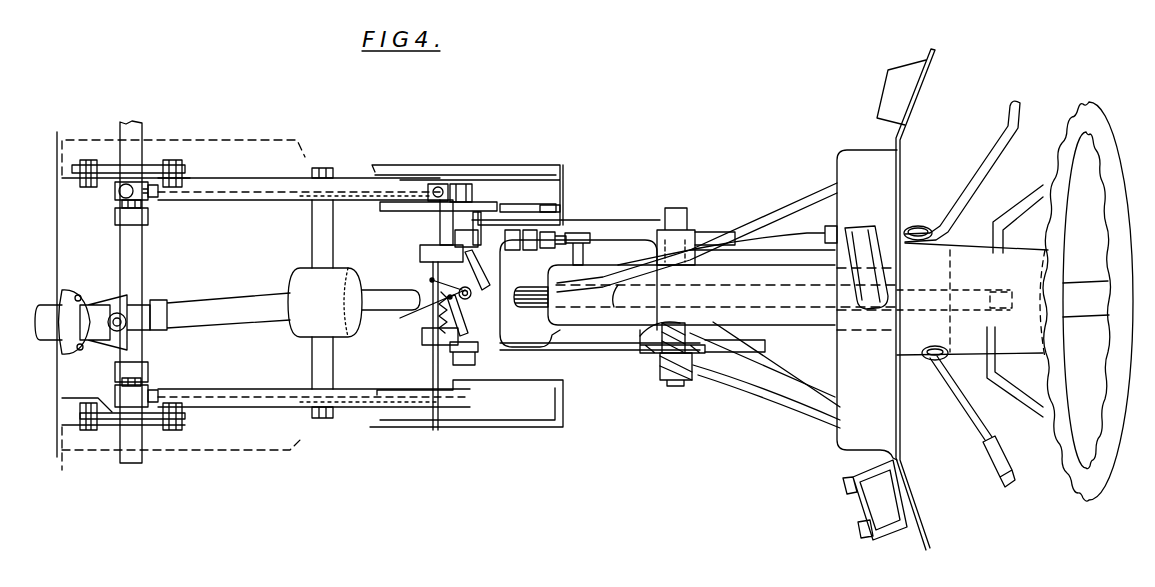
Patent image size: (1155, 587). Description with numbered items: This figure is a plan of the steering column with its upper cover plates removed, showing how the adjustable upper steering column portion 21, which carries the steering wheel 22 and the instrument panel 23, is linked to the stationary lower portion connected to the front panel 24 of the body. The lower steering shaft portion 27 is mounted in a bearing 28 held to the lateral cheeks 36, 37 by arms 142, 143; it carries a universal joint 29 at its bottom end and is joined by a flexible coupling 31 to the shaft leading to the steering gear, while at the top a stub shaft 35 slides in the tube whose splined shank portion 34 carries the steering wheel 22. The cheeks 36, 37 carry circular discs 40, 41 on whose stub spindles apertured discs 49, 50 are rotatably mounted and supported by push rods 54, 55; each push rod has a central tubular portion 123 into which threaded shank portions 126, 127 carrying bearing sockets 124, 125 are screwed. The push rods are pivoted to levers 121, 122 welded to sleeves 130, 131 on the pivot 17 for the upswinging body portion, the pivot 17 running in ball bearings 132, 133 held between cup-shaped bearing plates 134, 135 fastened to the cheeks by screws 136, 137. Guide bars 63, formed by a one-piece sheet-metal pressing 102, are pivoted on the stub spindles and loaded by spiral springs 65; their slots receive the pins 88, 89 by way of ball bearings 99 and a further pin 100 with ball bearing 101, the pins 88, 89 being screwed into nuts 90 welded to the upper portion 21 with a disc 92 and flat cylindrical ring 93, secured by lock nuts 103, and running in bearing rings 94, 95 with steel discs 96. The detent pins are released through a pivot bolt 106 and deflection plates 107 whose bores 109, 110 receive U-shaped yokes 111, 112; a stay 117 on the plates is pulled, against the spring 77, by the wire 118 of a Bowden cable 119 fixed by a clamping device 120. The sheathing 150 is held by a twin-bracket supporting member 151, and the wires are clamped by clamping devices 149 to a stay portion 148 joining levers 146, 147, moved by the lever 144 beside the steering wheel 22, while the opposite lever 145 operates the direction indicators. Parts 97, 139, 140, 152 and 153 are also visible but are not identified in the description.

The pivot 17 is at (130, 263).
The upper steering column portion 21 is at (836, 329).
The steering wheel 22 is at (1077, 112).
The instrument panel 23 is at (868, 118).
The front panel 24 is at (62, 450).
The lower steering shaft portion 27 is at (207, 313).
The bearing 28 is at (297, 283).
The universal joint 29 is at (102, 325).
The flexible coupling 31 is at (58, 295).
The splined shank portion 34 is at (962, 290).
The stub shaft 35 is at (530, 290).
The lateral cheek 36 is at (303, 173).
The lateral cheek 37 is at (323, 413).
The circular disc 40 is at (562, 165).
The circular disc 41 is at (557, 427).
The apertured disc 49 is at (560, 205).
The apertured disc 50 is at (557, 382).
The push rod 54 is at (348, 190).
The push rod 55 is at (340, 403).
The guide bar 63 is at (520, 350).
The spiral spring 65 is at (427, 252).
The spring 77 is at (452, 405).
The pin 88 is at (668, 232).
The pin 89 is at (683, 365).
The nut 90 is at (713, 322).
The disc 92 is at (703, 330).
The flat cylindrical ring 93 is at (638, 342).
The bearing ring 94 is at (693, 372).
The bearing ring 95 is at (697, 378).
The steel disc 96 is at (687, 367).
The housing 97 is at (538, 340).
The ball bearing 99 is at (652, 355).
The pin 100 is at (578, 340).
The ball bearing 101 is at (585, 345).
The sheet-metal pressing 102 is at (725, 235).
The lock nut 103 is at (690, 335).
The pivot bolt 106 is at (470, 293).
The deflection plate 107 is at (437, 303).
The bore 109 is at (470, 280).
The bore 110 is at (455, 300).
The U-shaped yoke 111 is at (465, 255).
The U-shaped yoke 112 is at (462, 328).
The stay 117 is at (453, 290).
The wire 118 is at (432, 280).
The Bowden cable 119 is at (807, 228).
The clamping device 120 is at (357, 298).
The lever 121 is at (148, 392).
The lever 122 is at (117, 202).
The central tubular portion 123 is at (247, 180).
The bearing socket 124 is at (117, 193).
The bearing socket 125 is at (468, 192).
The threaded shank portion 126 is at (153, 183).
The threaded shank portion 127 is at (440, 188).
The sleeve 130 is at (125, 367).
The sleeve 131 is at (118, 218).
The ball bearing 132 is at (147, 418).
The ball bearing 133 is at (115, 170).
The cup-shaped bearing plate 134 is at (118, 415).
The cup-shaped bearing plate 135 is at (78, 408).
The screw 136 is at (90, 423).
The screw 137 is at (180, 417).
The plate 139 is at (80, 413).
The bolt 140 is at (183, 413).
The arm 142 is at (310, 242).
The arm 143 is at (315, 370).
The lever 144 is at (1015, 108).
The operating lever 145 is at (973, 420).
The lever 146 is at (870, 265).
The lever 147 is at (875, 233).
The stay portion 148 is at (863, 230).
The clamping device 149 is at (848, 228).
The sheathing 150 is at (727, 240).
The twin-bracket supporting member 151 is at (827, 232).
The bar 152 is at (802, 405).
The link bar 153 is at (760, 190).